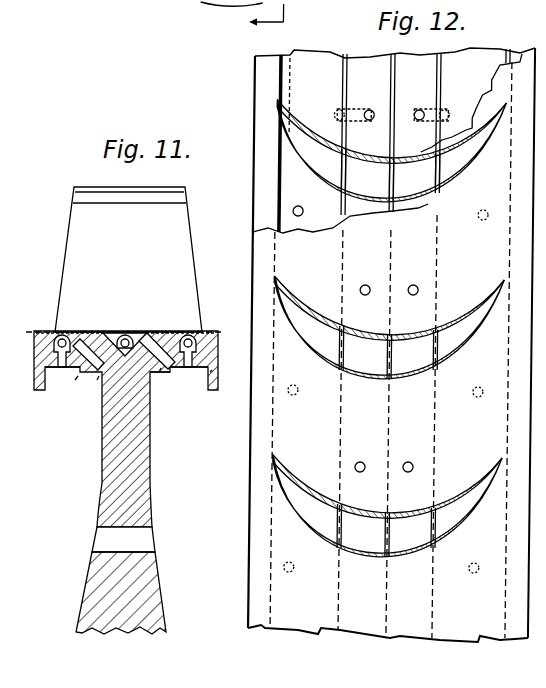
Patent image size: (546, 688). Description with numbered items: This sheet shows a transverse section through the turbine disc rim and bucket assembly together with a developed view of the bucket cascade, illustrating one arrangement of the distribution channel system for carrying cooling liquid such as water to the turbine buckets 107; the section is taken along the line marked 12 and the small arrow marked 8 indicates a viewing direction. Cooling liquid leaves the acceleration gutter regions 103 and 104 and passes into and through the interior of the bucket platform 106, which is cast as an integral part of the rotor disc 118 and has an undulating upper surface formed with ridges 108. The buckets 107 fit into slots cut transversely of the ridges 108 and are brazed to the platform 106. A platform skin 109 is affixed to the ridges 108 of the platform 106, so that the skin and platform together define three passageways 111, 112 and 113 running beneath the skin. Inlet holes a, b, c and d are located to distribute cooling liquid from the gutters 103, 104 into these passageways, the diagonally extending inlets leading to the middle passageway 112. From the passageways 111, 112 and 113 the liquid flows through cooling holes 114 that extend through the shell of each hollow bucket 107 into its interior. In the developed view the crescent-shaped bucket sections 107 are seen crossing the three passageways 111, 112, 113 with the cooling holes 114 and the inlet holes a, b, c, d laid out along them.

In FIG. 12, the section line arrow 8 is at (248, 17).
In FIG. 11, the section line 12- 12 is at (52, 322).
In FIG. 11, the gutter region 103 is at (77, 392).
In FIG. 11, the gutter region 104 is at (205, 392).
In FIG. 11, the bucket platform 106 is at (99, 330).
In FIG. 11, the turbine bucket 107 is at (145, 245).
In FIG. 12, the turbine bucket 107 is at (452, 200).
In FIG. 11, the ridge 108 is at (170, 373).
In FIG. 11, the platform skin 109 is at (142, 331).
In FIG. 12, the platform skin 109 is at (270, 231).
In FIG. 11, the passageway 111 is at (72, 334).
In FIG. 12, the passageway 111 is at (320, 82).
In FIG. 11, the passageway 112 is at (111, 334).
In FIG. 12, the passageway 112 is at (408, 88).
In FIG. 11, the passageway 113 is at (145, 314).
In FIG. 12, the passageway 113 is at (480, 82).
In FIG. 11, the cooling hole 114 is at (65, 331).
In FIG. 12, the cooling hole 114 is at (283, 137).
In FIG. 11, the rotor disc 118 is at (110, 456).
In FIG. 11, the inlet hole a is at (75, 380).
In FIG. 12, the inlet hole a is at (303, 206).
In FIG. 11, the inlet hole b is at (97, 380).
In FIG. 12, the inlet hole b is at (370, 110).
In FIG. 11, the inlet hole c is at (159, 374).
In FIG. 12, the inlet hole c is at (421, 110).
In FIG. 11, the inlet hole d is at (212, 371).
In FIG. 12, the inlet hole d is at (487, 210).